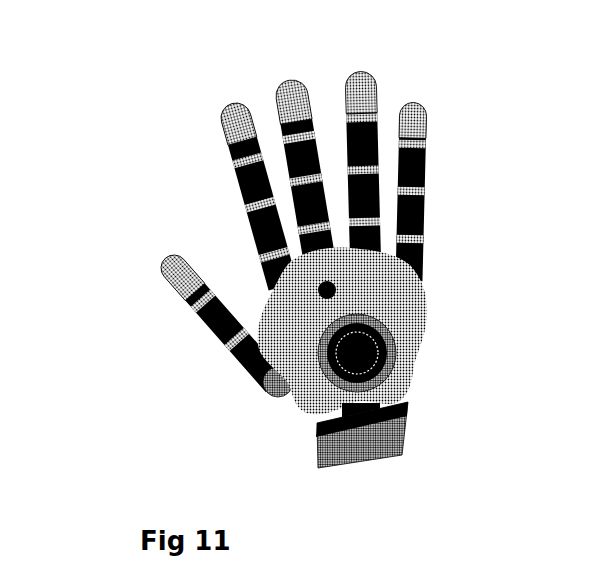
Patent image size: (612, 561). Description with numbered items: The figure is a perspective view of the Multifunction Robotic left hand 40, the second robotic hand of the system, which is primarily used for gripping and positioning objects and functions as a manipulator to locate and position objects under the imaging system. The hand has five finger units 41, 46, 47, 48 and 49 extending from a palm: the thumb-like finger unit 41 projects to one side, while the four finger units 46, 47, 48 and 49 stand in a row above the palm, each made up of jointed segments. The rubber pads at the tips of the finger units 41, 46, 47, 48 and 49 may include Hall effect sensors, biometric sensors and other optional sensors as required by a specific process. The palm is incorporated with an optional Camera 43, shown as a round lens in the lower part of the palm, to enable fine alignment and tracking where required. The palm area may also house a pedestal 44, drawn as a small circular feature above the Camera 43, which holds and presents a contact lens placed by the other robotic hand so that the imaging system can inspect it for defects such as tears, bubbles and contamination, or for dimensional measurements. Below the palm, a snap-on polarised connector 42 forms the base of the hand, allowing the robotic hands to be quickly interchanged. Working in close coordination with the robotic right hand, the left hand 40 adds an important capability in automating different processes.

The Multifunction Robotic left hand 40 is at (300, 402).
The finger unit 41 is at (217, 313).
The snap-on polarised connector 42 is at (410, 425).
The Camera 43 is at (397, 342).
The pedestal 44 is at (337, 290).
The finger unit 46 is at (245, 182).
The finger unit 47 is at (307, 157).
The finger unit 48 is at (363, 130).
The finger unit 49 is at (422, 220).